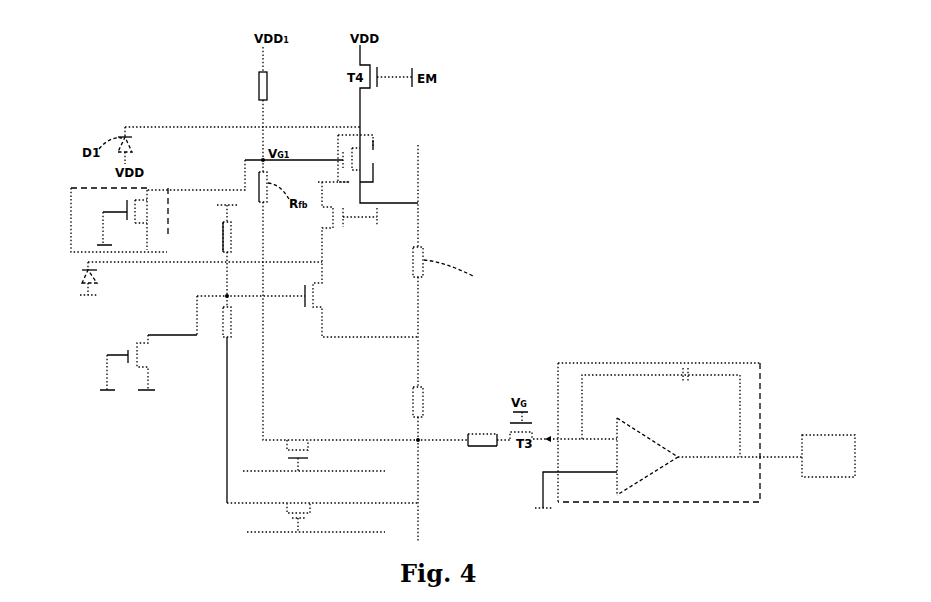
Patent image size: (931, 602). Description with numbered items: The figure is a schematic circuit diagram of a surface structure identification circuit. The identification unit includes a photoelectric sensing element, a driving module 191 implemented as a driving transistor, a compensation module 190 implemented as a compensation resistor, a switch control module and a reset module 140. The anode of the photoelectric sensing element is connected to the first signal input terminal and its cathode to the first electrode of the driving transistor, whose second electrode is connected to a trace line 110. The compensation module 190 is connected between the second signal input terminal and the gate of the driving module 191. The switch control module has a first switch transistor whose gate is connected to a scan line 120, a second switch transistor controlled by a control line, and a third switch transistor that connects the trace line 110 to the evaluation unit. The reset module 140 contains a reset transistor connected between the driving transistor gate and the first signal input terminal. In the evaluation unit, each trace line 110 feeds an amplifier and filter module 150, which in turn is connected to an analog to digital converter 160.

The trace line 110 is at (418, 183).
The scan line 120 is at (340, 471).
The reset module 140 is at (71, 211).
The amplifier and filter module 150 is at (632, 363).
The A/D converter 160 is at (832, 433).
The compensation module 190 is at (257, 85).
The driving module 191 is at (375, 137).